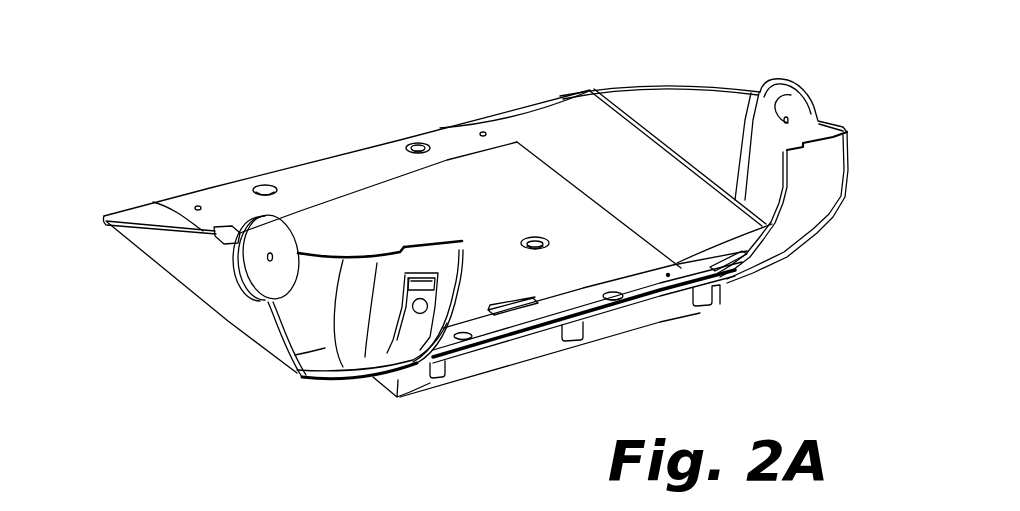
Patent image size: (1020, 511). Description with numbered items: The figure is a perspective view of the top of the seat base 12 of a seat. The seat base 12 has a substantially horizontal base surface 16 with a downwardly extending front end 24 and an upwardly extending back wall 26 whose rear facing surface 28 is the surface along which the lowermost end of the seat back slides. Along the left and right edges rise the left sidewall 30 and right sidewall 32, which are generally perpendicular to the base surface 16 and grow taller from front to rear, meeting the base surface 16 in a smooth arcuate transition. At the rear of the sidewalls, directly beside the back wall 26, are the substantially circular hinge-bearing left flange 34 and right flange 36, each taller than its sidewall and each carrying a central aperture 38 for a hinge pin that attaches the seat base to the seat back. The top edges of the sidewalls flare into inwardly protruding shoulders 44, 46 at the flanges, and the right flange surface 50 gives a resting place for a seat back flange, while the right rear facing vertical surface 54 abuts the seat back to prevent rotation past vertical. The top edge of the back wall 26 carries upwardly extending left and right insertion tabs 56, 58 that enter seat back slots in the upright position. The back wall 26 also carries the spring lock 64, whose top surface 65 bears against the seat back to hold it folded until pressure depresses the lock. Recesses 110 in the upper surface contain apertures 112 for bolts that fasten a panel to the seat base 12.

The seat base 12 is at (138, 401).
The base surface 16 is at (403, 212).
The front end 24 is at (325, 157).
The back wall 26 is at (458, 273).
The rear facing surface 28 is at (447, 263).
The left sidewall 30 is at (690, 120).
The right sidewall 32 is at (163, 245).
The left flange 34 is at (826, 93).
The right flange 36 is at (240, 272).
The aperture 38 is at (260, 268).
The shoulder 44 is at (759, 90).
The shoulder 46 is at (238, 228).
The right flange surface 50 is at (240, 300).
The right rear facing vertical surface 54 is at (307, 377).
The left insertion tab 56 is at (847, 131).
The right insertion tab 58 is at (427, 253).
The spring lock 64 is at (420, 327).
The top surface 65 is at (407, 250).
The recess 110 is at (427, 146).
The aperture 112 is at (417, 146).